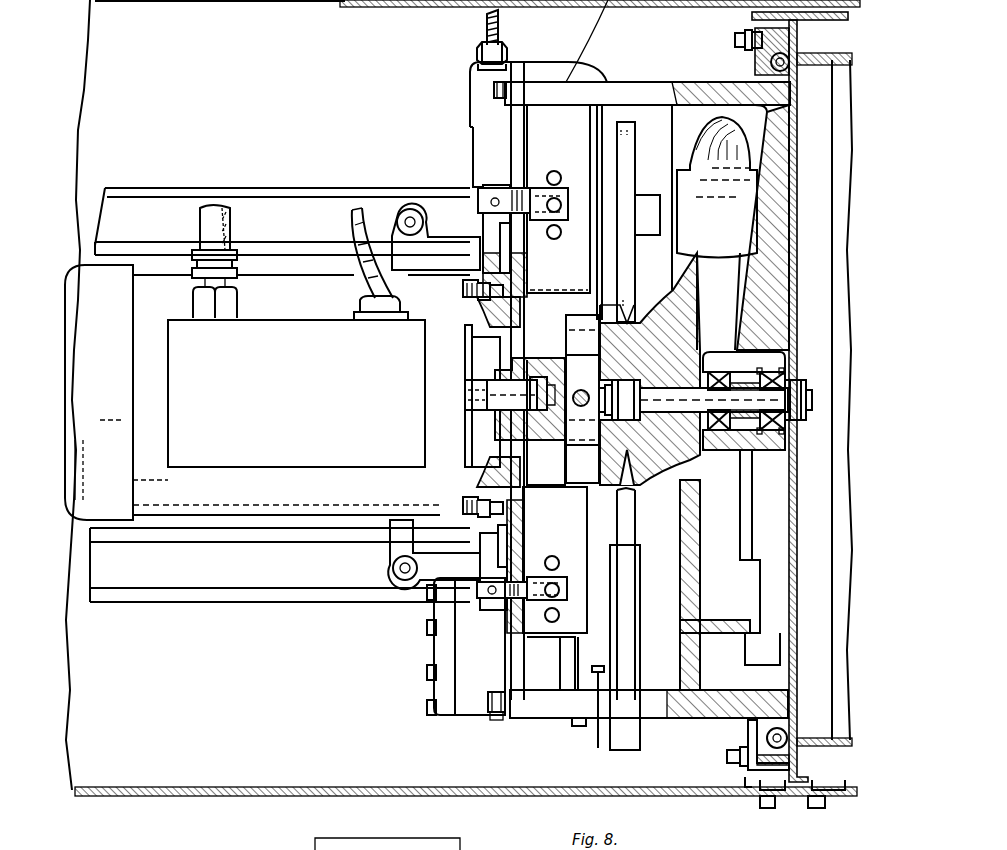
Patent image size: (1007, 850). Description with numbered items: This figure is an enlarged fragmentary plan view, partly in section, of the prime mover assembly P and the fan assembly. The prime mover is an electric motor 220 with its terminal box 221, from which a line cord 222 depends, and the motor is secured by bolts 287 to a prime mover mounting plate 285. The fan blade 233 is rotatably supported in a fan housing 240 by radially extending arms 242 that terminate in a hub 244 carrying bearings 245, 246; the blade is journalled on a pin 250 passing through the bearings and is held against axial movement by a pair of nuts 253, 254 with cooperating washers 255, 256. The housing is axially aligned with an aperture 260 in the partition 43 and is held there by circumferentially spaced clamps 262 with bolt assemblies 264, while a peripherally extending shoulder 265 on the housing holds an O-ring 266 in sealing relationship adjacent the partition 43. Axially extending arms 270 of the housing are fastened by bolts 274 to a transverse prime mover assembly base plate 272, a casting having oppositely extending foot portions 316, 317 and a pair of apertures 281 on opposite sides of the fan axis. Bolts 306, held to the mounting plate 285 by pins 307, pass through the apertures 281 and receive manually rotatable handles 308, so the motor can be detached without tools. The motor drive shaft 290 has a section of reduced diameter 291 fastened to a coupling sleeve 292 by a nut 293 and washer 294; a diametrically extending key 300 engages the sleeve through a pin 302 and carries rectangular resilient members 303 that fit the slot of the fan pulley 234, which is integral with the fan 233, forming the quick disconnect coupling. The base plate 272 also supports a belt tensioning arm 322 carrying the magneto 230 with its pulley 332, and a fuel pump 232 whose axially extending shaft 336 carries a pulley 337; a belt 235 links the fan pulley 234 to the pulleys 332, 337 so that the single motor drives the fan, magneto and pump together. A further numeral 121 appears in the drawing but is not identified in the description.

The adjusting bolt 121 is at (485, 22).
The magneto 230 is at (568, 30).
The fan housing 240 is at (647, 74).
The peripherally extending shoulder 265 is at (765, 68).
The O-ring 266 is at (790, 66).
The partition 43 is at (800, 104).
The aperture 260 is at (796, 195).
The radially extending arms 242 is at (775, 250).
The bolts 274 is at (490, 90).
The prime mover assembly base plate 272 is at (500, 125).
The apertures 281 is at (530, 175).
The pins 307 is at (494, 198).
The manually rotatable handle 308 is at (553, 172).
The belt tensioning arm 322 is at (615, 160).
The pulley 332 is at (640, 190).
The bolts 306 is at (483, 200).
The foot portion 316 is at (445, 245).
The foot portion 317 is at (395, 540).
The fan blade 233 is at (738, 655).
The belt 235 is at (625, 272).
The resilient members 303 is at (572, 322).
The key 300 is at (566, 345).
The pin 302 is at (583, 390).
The nut 254 is at (632, 372).
The washer 255 is at (645, 390).
The washer 256 is at (780, 368).
The nut 253 is at (806, 370).
The washer 294 is at (548, 375).
The drive shaft 290 is at (470, 395).
The nut 293 is at (548, 398).
The section of reduced diameter 291 is at (488, 420).
The coupling sleeve 292 is at (533, 445).
The pin 250 is at (665, 418).
The bearing 245 is at (780, 428).
The bearing 246 is at (707, 430).
The hub 244 is at (745, 440).
The bolts 287 is at (470, 296).
The terminal box 221 is at (240, 405).
The line cord 222 is at (232, 218).
The electric motor 220 is at (312, 520).
The prime mover assembly P is at (250, 520).
The prime mover mounting plate 285 is at (487, 555).
The fan pulley 234 is at (622, 486).
The pulley 337 is at (637, 625).
The fuel pump 232 is at (458, 695).
The arms 270 is at (545, 708).
The shaft 336 is at (598, 676).
The bolt assemblies 264 is at (767, 740).
The clamps 262 is at (752, 768).